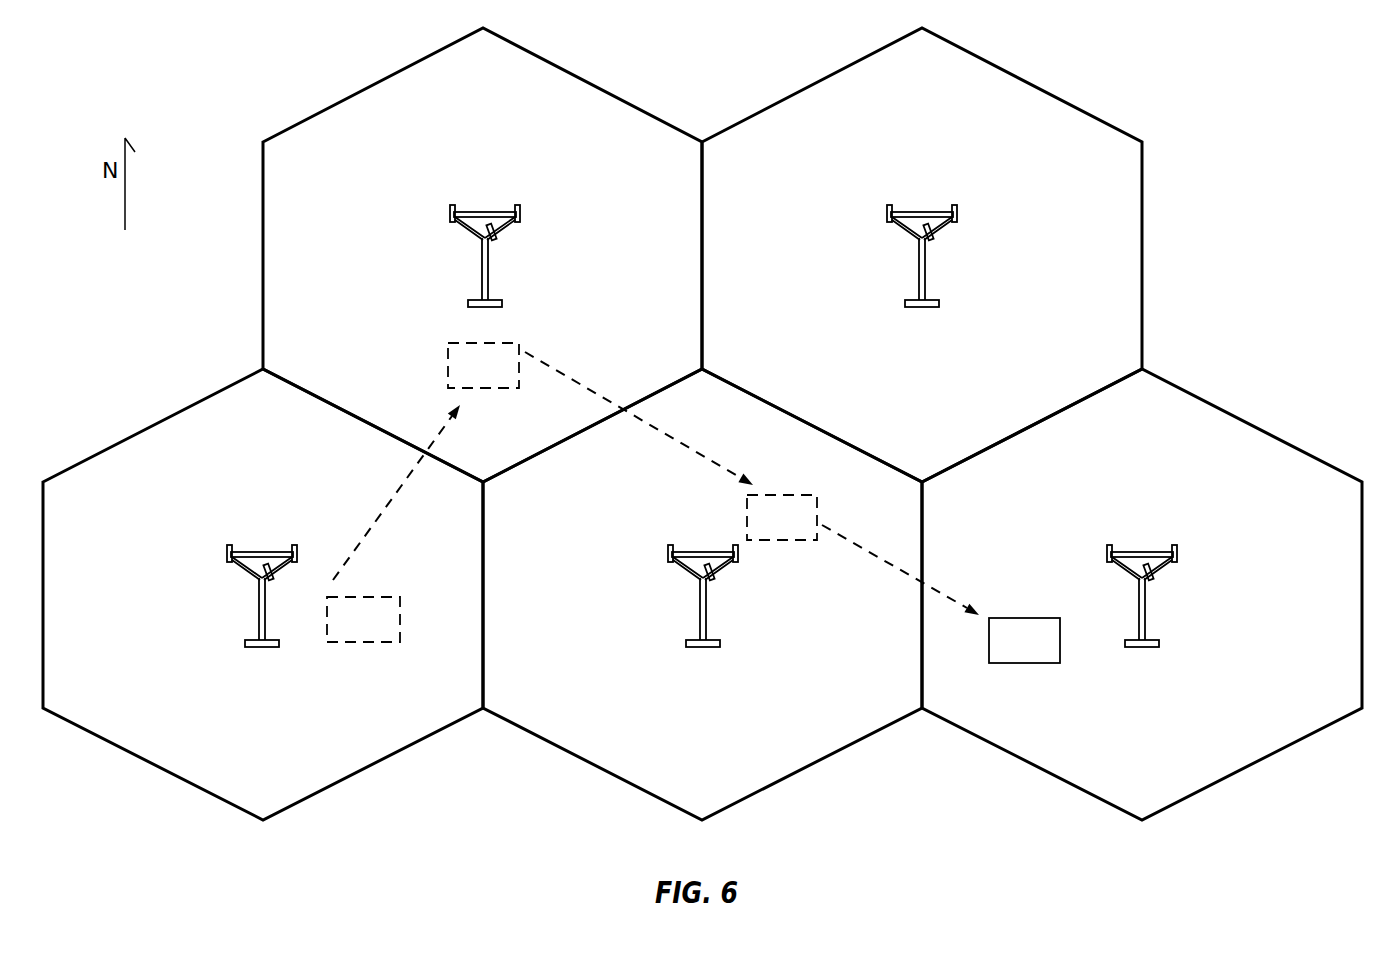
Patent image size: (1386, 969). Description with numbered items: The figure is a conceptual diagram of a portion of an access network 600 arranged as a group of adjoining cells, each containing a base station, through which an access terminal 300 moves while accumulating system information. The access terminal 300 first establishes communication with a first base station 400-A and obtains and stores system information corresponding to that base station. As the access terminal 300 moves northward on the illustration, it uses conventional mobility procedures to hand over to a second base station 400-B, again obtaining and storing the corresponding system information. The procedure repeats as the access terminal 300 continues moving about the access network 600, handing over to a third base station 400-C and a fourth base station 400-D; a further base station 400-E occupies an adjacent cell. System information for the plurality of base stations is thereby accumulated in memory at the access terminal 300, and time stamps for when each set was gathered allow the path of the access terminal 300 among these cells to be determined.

The access network 600 is at (1267, 255).
The first base station 400-A is at (262, 552).
The second base station 400-B is at (482, 212).
The third base station 400-C is at (702, 552).
The fourth base station 400-D is at (1142, 552).
The base station E 400-E is at (923, 212).
The access terminal 300 is at (488, 343).